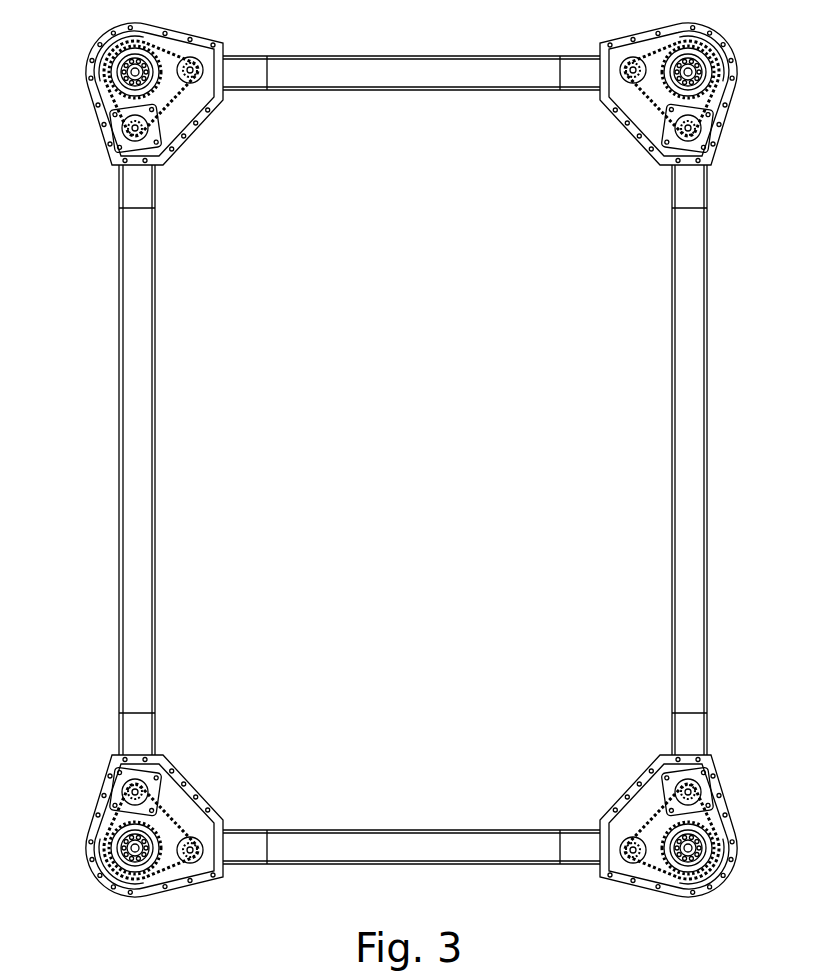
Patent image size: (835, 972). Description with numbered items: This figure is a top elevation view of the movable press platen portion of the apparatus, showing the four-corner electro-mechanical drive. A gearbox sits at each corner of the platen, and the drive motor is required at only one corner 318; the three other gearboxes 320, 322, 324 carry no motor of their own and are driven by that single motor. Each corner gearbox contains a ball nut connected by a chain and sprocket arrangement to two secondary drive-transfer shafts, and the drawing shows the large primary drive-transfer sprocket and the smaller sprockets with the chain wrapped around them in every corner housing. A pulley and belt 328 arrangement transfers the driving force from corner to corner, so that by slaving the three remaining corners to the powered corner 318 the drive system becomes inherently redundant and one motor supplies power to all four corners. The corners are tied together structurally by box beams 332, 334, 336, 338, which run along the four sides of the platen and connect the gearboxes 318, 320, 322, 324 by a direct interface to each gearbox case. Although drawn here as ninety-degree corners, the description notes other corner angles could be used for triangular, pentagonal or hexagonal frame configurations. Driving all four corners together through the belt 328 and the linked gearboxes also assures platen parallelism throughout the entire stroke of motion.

The corner gearbox 318 is at (208, 795).
The gearbox 320 is at (97, 102).
The gearbox 322 is at (724, 125).
The gearbox 324 is at (618, 798).
The belt 328 is at (476, 865).
The box beam 332 is at (152, 387).
The box beam 334 is at (675, 378).
The box beam 336 is at (428, 57).
The box beam 338 is at (411, 851).